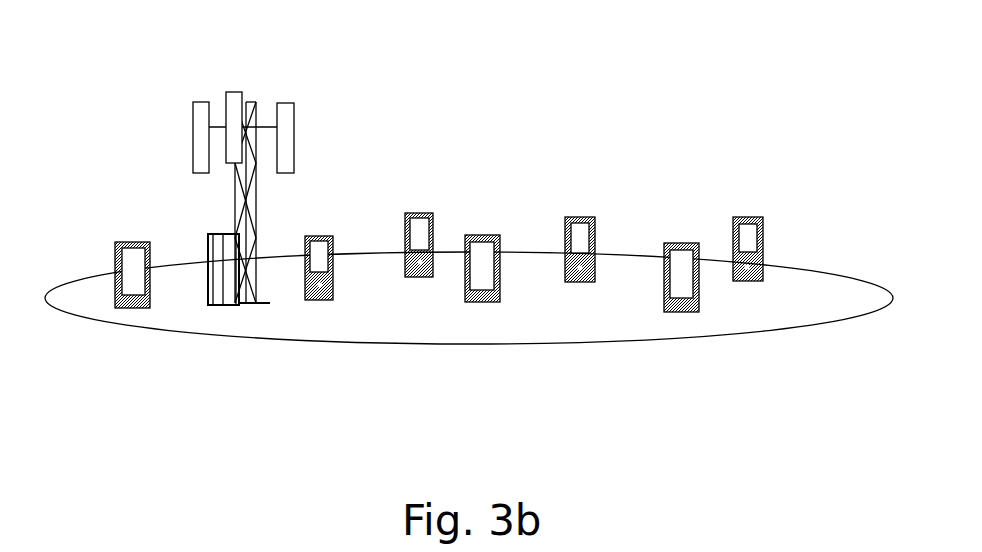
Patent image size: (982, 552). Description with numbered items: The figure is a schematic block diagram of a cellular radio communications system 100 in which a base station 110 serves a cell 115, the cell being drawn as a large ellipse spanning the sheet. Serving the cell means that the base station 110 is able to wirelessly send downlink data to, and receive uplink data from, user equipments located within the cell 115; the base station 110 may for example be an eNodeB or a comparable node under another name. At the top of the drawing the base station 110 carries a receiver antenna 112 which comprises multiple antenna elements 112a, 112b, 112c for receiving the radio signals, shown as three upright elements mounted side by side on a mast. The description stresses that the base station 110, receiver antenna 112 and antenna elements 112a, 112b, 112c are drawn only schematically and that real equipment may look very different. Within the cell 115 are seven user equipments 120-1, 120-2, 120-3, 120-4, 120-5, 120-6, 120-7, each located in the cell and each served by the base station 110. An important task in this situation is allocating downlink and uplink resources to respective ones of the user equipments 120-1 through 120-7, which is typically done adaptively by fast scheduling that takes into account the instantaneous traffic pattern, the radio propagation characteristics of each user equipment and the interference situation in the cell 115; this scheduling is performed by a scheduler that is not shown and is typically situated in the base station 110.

The radio communications system 100 is at (452, 376).
The base station 110 is at (257, 211).
The receiver antenna 112 is at (204, 123).
The antenna element 112a is at (196, 130).
The antenna element 112b is at (232, 94).
The antenna element 112c is at (291, 104).
The cell 115 is at (217, 328).
The user equipment 120-1 is at (402, 262).
The user equipment 120-2 is at (762, 267).
The user equipment 120-3 is at (665, 288).
The user equipment 120-4 is at (563, 268).
The user equipment 120-5 is at (470, 302).
The user equipment 120-6 is at (326, 300).
The user equipment 120-7 is at (113, 308).